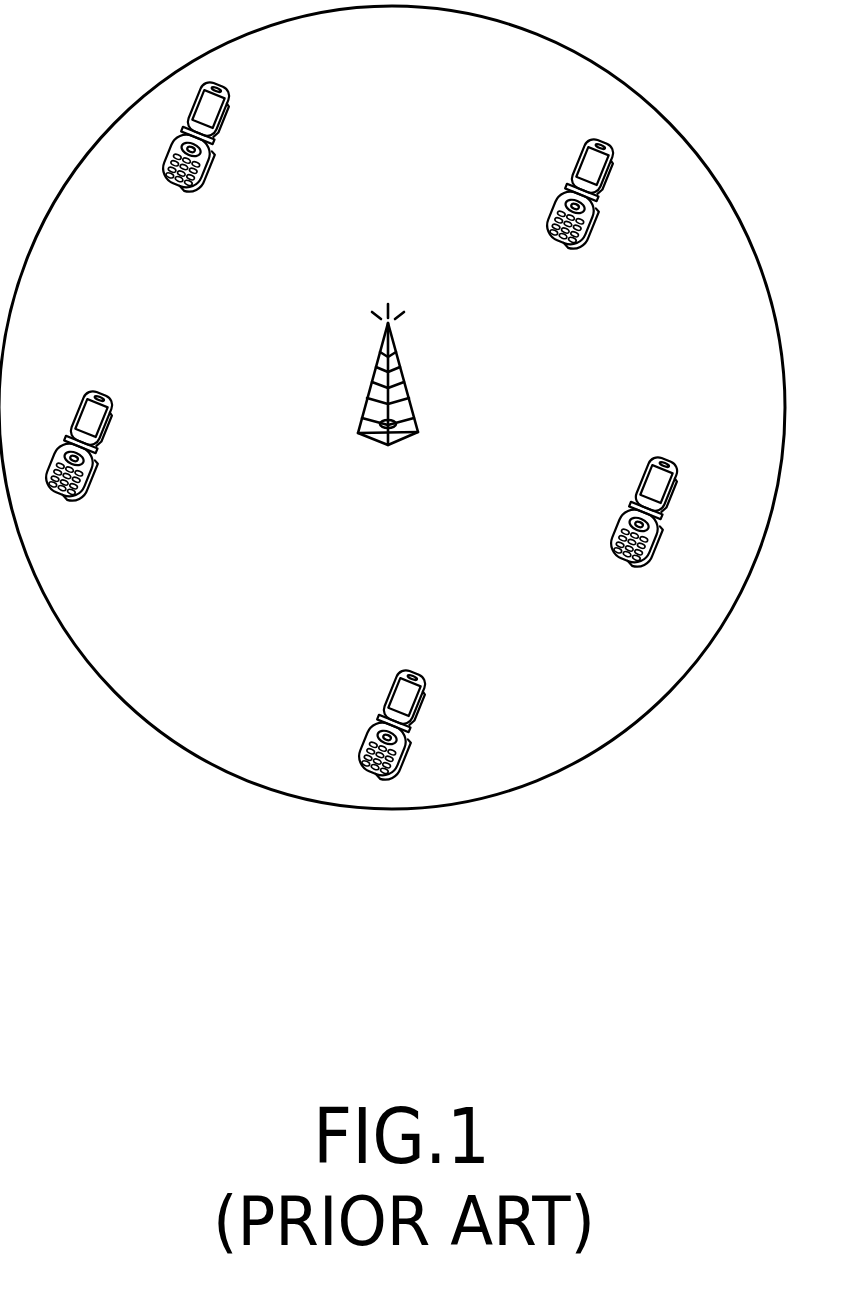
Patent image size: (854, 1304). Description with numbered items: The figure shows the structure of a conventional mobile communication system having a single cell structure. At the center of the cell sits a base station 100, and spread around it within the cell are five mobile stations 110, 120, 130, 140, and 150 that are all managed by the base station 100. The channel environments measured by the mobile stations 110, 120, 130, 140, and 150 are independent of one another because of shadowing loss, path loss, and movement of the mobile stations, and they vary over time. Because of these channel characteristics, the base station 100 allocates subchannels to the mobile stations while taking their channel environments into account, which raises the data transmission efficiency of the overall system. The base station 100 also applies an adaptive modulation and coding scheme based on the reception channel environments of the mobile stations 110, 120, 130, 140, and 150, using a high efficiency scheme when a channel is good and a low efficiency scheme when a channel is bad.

The base station 100 is at (410, 388).
The mobile station 110 is at (236, 118).
The mobile station 120 is at (118, 428).
The mobile station 130 is at (428, 705).
The mobile station 140 is at (680, 492).
The mobile station 150 is at (616, 180).